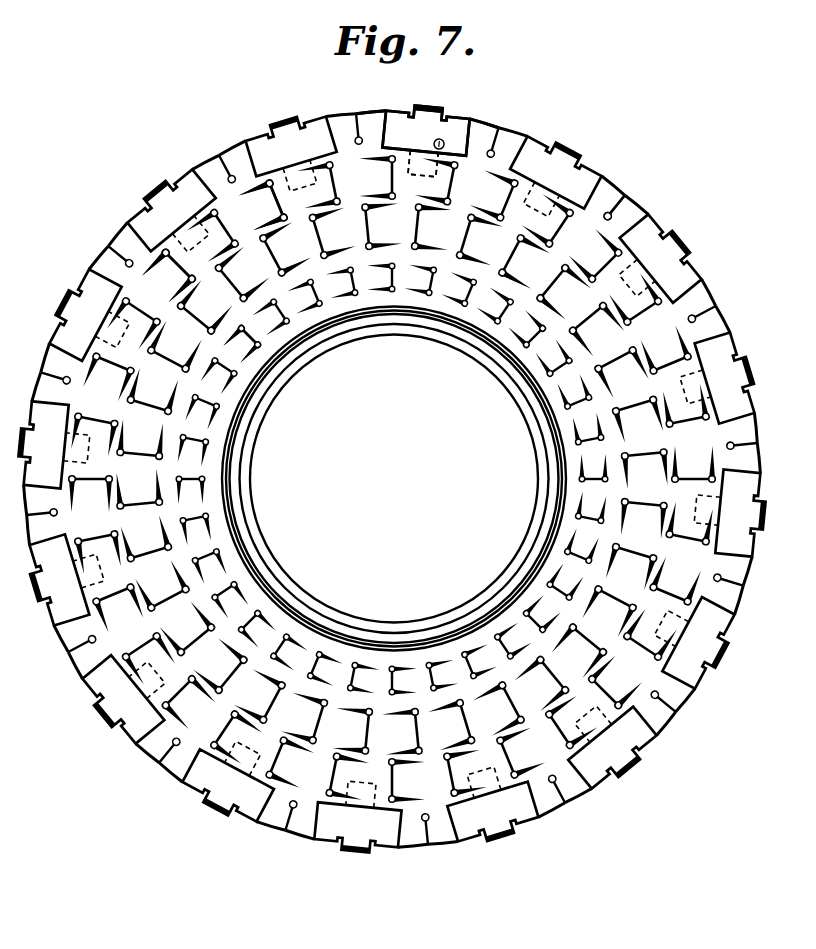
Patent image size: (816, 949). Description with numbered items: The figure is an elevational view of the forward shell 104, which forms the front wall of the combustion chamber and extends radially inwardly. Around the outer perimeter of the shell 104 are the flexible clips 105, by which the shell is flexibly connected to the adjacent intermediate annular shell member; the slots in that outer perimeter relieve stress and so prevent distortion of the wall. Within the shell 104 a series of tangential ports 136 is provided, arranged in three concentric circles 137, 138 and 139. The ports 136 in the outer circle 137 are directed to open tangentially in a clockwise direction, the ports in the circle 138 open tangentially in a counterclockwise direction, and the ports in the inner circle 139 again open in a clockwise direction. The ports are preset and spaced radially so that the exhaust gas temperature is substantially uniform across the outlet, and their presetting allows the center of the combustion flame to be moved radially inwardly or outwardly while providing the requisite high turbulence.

The forward shell 104 is at (490, 137).
The flexible clips 105 is at (432, 128).
The tangential ports 136 is at (602, 196).
The circle 137 is at (258, 197).
The circle 138 is at (202, 258).
The circle 139 is at (235, 340).